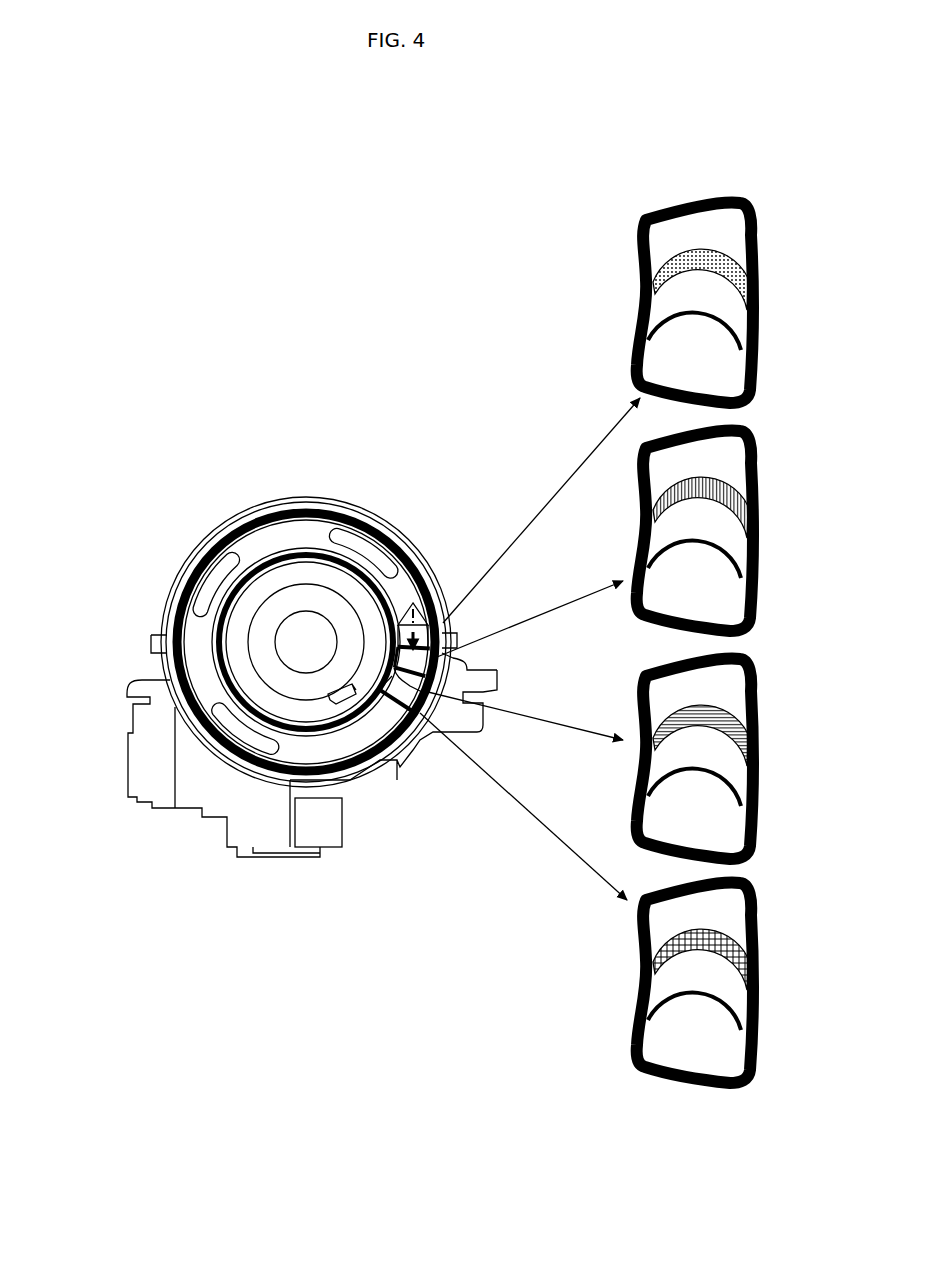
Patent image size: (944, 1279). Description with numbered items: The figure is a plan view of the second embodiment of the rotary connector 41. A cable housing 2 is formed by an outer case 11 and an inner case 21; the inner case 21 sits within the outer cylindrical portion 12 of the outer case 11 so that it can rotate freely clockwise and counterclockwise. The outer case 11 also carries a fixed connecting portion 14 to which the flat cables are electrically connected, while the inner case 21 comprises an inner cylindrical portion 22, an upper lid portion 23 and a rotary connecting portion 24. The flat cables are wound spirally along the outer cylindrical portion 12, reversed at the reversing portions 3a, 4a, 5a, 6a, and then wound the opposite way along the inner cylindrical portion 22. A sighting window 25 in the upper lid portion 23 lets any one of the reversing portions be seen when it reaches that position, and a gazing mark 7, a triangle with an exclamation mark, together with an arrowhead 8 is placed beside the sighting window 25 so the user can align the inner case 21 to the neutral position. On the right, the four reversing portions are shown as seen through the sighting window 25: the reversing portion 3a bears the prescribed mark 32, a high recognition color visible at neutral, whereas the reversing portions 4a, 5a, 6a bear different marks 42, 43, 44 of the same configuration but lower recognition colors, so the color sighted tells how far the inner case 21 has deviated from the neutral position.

The rotary connector 41 is at (366, 432).
The cable housing 2 is at (212, 580).
The gazing mark 7 is at (403, 597).
The arrowhead 8 is at (415, 650).
The inner case 21 is at (235, 626).
The inner cylindrical portion 22 is at (217, 642).
The upper lid portion 23 is at (197, 673).
The rotary connecting portion 24 is at (273, 535).
The sighting window 25 is at (440, 660).
The outer case 11 is at (330, 822).
The outer cylindrical portion 12 is at (348, 787).
The fixed connecting portion 14 is at (340, 836).
The mark 32 is at (750, 261).
The reversing portion 3a is at (747, 355).
The different mark 42 is at (750, 489).
The reversing portion 4a is at (747, 583).
The different mark 43 is at (750, 717).
The reversing portion 5a is at (747, 811).
The different mark 44 is at (750, 941).
The reversing portion 6a is at (747, 1035).